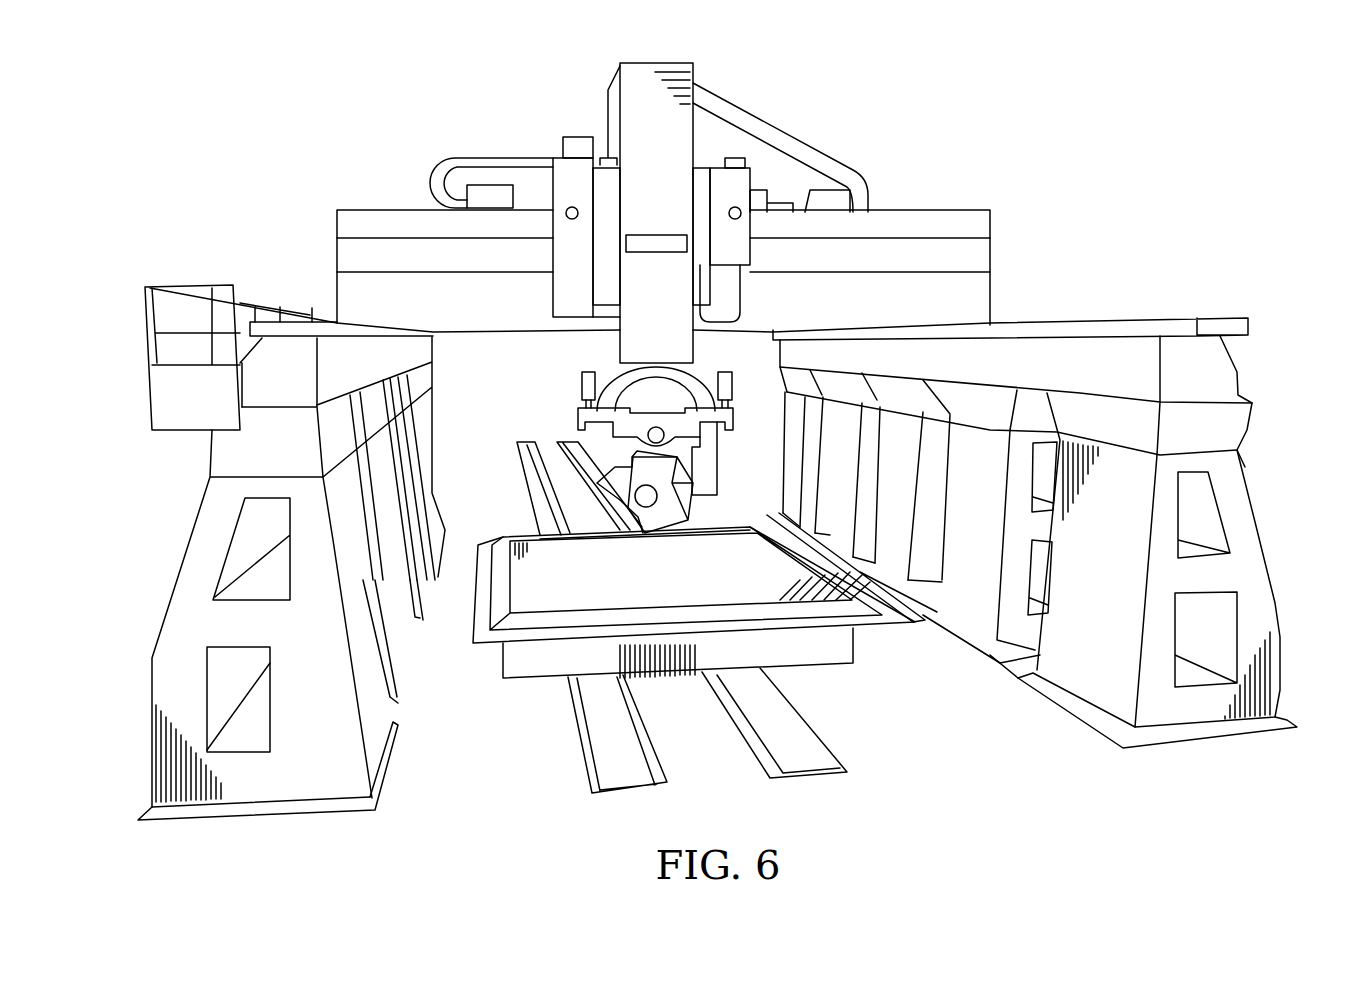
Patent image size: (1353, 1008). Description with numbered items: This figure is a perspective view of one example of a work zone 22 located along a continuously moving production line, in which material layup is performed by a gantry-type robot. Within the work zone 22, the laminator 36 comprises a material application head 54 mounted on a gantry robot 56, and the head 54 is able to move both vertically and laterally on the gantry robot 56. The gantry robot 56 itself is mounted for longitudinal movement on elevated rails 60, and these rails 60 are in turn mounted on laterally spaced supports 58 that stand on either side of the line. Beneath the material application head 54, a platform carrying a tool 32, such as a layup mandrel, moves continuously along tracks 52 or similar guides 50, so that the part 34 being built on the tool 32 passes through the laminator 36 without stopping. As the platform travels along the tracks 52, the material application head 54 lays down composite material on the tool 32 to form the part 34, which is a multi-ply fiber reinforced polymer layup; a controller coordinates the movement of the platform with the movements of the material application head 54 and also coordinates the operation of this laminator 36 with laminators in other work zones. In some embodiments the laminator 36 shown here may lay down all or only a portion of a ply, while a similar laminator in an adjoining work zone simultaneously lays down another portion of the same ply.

The work zone 22 is at (168, 104).
The tool 32 is at (483, 545).
The part 34 is at (730, 535).
The laminator 36 is at (794, 98).
The guides 50 is at (832, 729).
The tracks 52 is at (587, 758).
The material application head 54 is at (668, 525).
The gantry robot 56 is at (942, 210).
The supports 58 is at (165, 617).
The elevated rails 60 is at (290, 305).